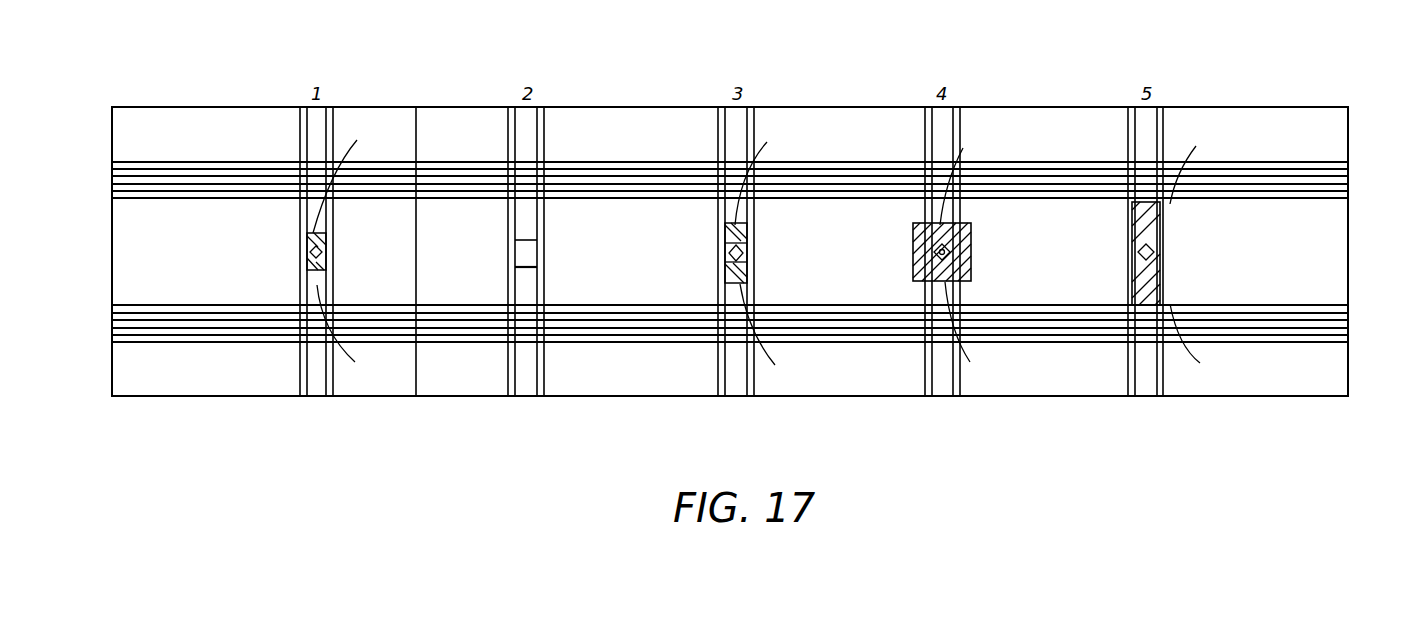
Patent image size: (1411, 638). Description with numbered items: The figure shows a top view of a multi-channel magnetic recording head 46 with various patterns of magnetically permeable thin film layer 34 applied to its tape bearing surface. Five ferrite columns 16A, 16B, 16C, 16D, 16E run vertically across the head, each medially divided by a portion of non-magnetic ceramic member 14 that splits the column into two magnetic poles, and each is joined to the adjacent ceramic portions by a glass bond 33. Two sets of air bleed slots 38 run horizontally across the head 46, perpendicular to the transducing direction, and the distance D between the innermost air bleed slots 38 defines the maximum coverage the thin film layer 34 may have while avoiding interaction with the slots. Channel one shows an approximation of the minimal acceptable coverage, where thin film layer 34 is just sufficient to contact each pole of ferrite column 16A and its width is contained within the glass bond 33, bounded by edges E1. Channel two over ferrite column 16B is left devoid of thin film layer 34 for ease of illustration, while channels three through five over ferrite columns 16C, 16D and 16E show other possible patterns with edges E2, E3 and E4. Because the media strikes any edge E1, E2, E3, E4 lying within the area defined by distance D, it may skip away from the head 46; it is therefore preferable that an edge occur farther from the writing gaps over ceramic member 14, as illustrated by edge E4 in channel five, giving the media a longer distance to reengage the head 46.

The air bleed slots 38 is at (105, 158).
The glass bond 33 is at (539, 218).
The ceramic member 14 is at (530, 258).
The thin film layer 34 is at (318, 252).
The ferrite column 16A is at (316, 380).
The ferrite column 16B is at (523, 382).
The ferrite column 16C is at (735, 380).
The ferrite column 16D is at (940, 382).
The ferrite column 16E is at (1145, 382).
The edge of thin film layer E1 is at (346, 255).
The edge of thin film layer E2 is at (767, 259).
The edge of thin film layer E3 is at (967, 260).
The edge of thin film layer E4 is at (1195, 261).
The head 46 is at (1305, 90).
The distance D is at (1392, 200).